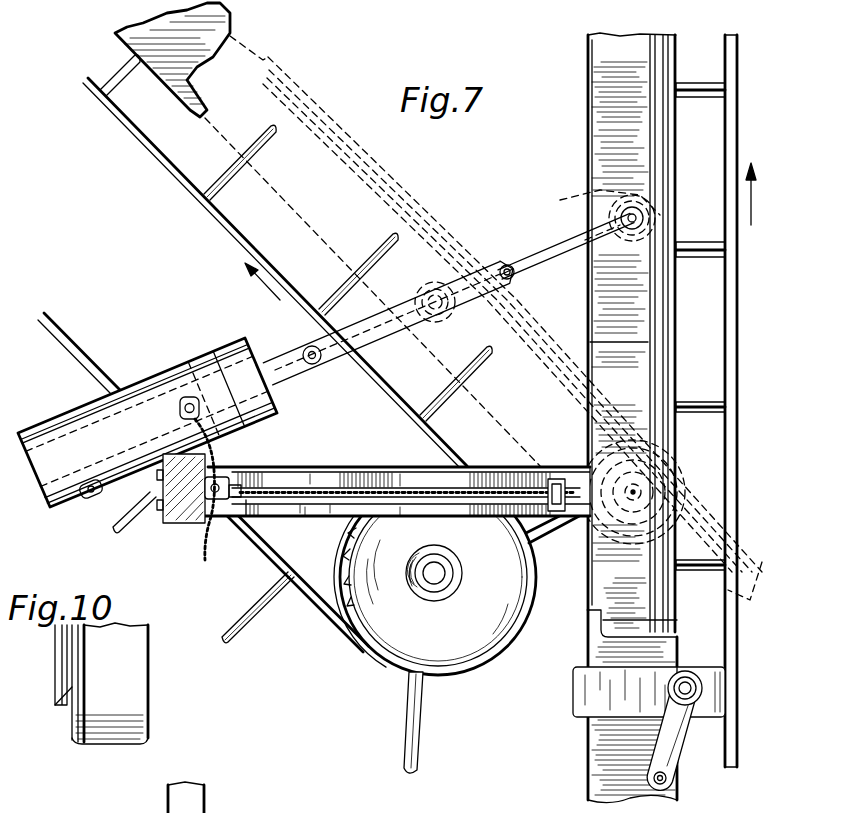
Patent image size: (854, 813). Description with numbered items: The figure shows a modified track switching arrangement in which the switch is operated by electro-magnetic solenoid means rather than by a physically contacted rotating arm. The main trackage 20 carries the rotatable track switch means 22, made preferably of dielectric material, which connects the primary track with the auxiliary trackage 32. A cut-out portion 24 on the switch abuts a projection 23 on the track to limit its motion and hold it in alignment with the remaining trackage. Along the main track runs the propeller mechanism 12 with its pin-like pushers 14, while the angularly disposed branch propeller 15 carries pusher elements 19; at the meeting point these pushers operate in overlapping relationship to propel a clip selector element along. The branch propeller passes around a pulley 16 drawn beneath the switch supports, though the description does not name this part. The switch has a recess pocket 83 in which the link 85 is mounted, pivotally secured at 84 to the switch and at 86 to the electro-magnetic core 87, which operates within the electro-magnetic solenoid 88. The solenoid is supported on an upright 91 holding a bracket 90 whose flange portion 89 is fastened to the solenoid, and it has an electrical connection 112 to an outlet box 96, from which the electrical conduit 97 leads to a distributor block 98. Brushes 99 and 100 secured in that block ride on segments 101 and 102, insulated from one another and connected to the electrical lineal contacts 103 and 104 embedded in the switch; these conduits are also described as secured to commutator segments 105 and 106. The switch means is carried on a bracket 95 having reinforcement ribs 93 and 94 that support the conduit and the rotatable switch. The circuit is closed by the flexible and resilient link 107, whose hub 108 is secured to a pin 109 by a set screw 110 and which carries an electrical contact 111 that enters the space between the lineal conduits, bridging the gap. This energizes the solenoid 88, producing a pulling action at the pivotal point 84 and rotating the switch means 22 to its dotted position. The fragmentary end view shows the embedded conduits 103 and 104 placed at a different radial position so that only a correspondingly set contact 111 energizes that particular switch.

In FIG. 7, the propeller mechanism 12 is at (752, 406).
In FIG. 7, the pushers 14 is at (693, 98).
In FIG. 7, the branch propeller 15 is at (331, 638).
In FIG. 7, the pulley 16 is at (392, 620).
In FIG. 7, the pusher elements 19 is at (276, 145).
In FIG. 7, the main trackage 20 is at (582, 766).
In FIG. 7, the track switch means 22 is at (605, 133).
In FIG. 10, the track switch means 22 is at (150, 705).
In FIG. 7, the projection 23 is at (600, 626).
In FIG. 7, the cut-out portion 24 is at (588, 608).
In FIG. 7, the auxiliary trackage 32 is at (120, 35).
In FIG. 7, the recess pocket 83 is at (575, 195).
In FIG. 7, the pivot 84 is at (630, 228).
In FIG. 7, the link 85 is at (415, 300).
In FIG. 7, the pivot 86 is at (305, 350).
In FIG. 7, the electro-magnetic core 87 is at (335, 365).
In FIG. 7, the electro-magnetic solenoid 88 is at (163, 372).
In FIG. 7, the flange portion 89 is at (90, 497).
In FIG. 7, the bracket 90 is at (165, 505).
In FIG. 7, the upright 91 is at (205, 520).
In FIG. 10, the upright 91 is at (206, 805).
In FIG. 7, the reinforcement rib 93 is at (390, 468).
In FIG. 7, the reinforcement rib 94 is at (298, 518).
In FIG. 7, the bracket 95 is at (326, 460).
In FIG. 7, the outlet box 96 is at (233, 518).
In FIG. 7, the electrical conduit 97 is at (208, 558).
In FIG. 7, the distributor block 98 is at (572, 478).
In FIG. 7, the brush 99 is at (583, 470).
In FIG. 7, the brush 100 is at (545, 540).
In FIG. 7, the segment 101 is at (625, 430).
In FIG. 7, the segment 102 is at (567, 578).
In FIG. 7, the lineal contact 103 is at (680, 620).
In FIG. 10, the lineal contact 103 is at (55, 718).
In FIG. 7, the lineal contact 104 is at (680, 636).
In FIG. 10, the lineal contact 104 is at (107, 740).
In FIG. 7, the commutator segment 105 is at (660, 470).
In FIG. 7, the commutator segment 106 is at (650, 507).
In FIG. 7, the link 107 is at (683, 748).
In FIG. 7, the hub 108 is at (705, 690).
In FIG. 7, the pin 109 is at (687, 680).
In FIG. 7, the set screw 110 is at (700, 710).
In FIG. 7, the electrical contact 111 is at (668, 782).
In FIG. 7, the electrical connection 112 is at (232, 462).